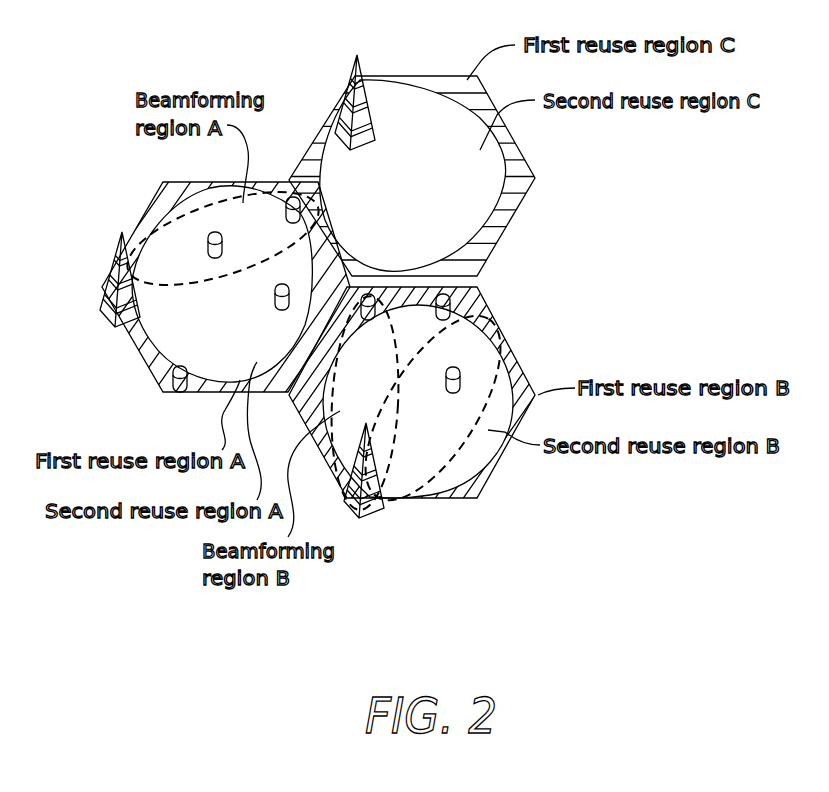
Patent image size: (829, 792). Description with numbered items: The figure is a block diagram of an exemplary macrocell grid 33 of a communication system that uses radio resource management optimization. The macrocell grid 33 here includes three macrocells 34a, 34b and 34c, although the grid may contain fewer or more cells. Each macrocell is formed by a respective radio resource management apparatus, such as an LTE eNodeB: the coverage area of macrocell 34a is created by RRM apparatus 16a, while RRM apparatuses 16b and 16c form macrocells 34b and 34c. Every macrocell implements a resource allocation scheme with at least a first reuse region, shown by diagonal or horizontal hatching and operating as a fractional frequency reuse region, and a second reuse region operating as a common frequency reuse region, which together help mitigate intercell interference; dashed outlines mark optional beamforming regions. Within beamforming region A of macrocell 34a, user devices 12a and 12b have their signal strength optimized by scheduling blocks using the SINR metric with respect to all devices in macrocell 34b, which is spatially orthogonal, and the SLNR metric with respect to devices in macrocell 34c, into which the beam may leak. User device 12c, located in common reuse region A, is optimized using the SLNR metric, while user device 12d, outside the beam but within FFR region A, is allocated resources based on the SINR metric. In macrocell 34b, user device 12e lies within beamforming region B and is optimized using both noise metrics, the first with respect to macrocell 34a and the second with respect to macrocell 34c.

The user device 12a is at (222, 257).
The user device 12b is at (283, 198).
The user device 12c is at (276, 310).
The user device 12d is at (180, 393).
The user device 12e is at (367, 320).
The radio resource management apparatus 16a is at (114, 276).
The radio resource management apparatus 16b is at (367, 517).
The radio resource management apparatus 16c is at (356, 72).
The macrocell grid 33 is at (520, 296).
The macrocell 34a is at (135, 343).
The macrocell 34b is at (472, 500).
The macrocell 34c is at (535, 178).